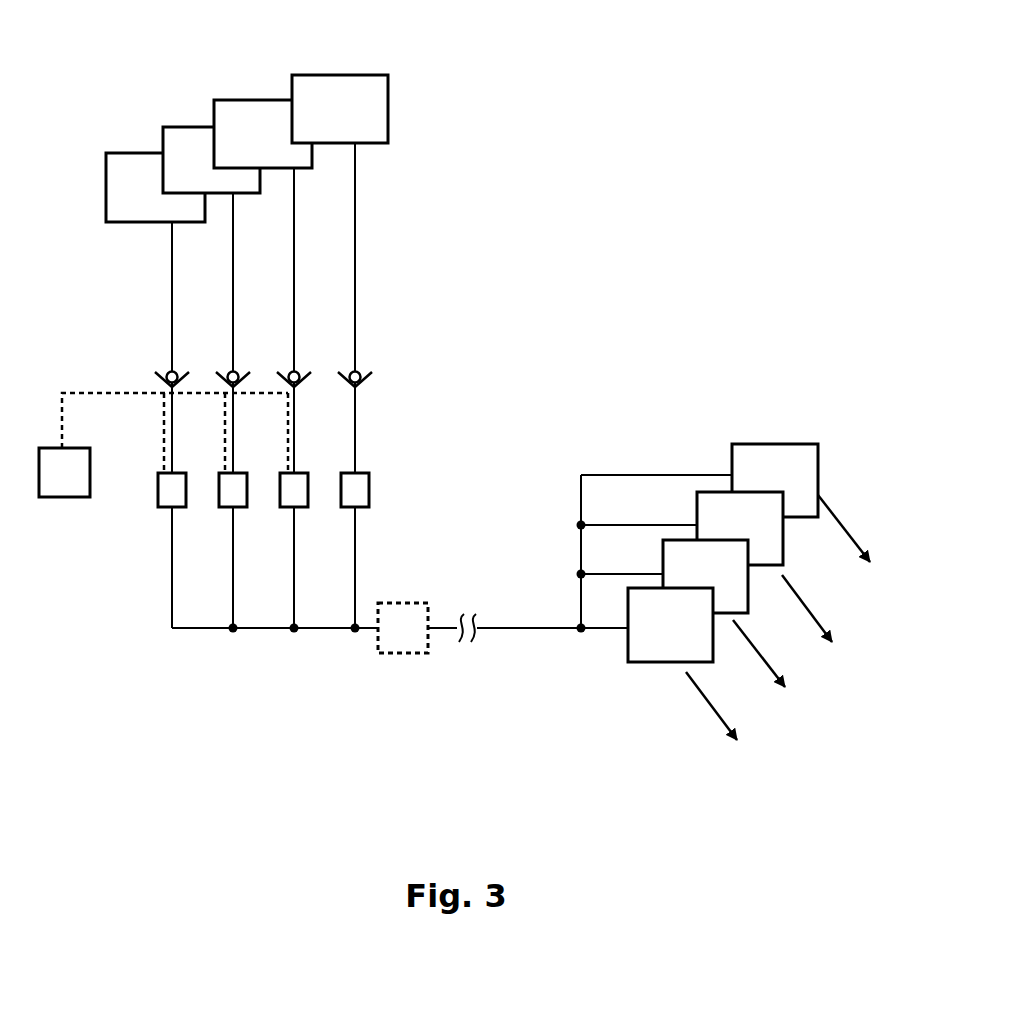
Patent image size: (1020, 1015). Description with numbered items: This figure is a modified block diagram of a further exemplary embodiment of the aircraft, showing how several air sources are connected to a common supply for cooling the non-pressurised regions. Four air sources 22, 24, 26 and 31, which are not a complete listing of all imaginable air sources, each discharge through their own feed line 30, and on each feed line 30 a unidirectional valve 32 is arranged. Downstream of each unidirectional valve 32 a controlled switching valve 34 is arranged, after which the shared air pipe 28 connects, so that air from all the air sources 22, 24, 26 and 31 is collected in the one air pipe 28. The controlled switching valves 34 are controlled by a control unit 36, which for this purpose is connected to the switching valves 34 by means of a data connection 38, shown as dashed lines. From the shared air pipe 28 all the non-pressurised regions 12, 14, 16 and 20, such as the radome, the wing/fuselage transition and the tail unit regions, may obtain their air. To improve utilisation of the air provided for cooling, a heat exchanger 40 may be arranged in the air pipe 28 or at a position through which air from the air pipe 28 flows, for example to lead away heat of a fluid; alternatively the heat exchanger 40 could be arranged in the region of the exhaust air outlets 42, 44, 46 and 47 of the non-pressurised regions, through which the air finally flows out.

The non-pressurised region 12 is at (773, 460).
The non-pressurised region 14 is at (663, 640).
The non-pressurised region 16 is at (688, 563).
The non-pressurised region 20 is at (718, 513).
The air source 22 is at (265, 113).
The air source 24 is at (192, 135).
The air source 26 is at (153, 210).
The shared air pipe 28 is at (515, 628).
The light guide 30 is at (172, 288).
The air source 31 is at (357, 88).
The unidirectional valve 32 is at (176, 372).
The controlled switching valve 34 is at (176, 480).
The control unit 36 is at (80, 478).
The data connection 38 is at (112, 392).
The heat exchanger 40 is at (397, 647).
The exhaust air outlet 42 is at (710, 708).
The exhaust air outlet 44 is at (760, 668).
The exhaust air outlet 46 is at (807, 605).
The exhaust air outlet 47 is at (845, 527).